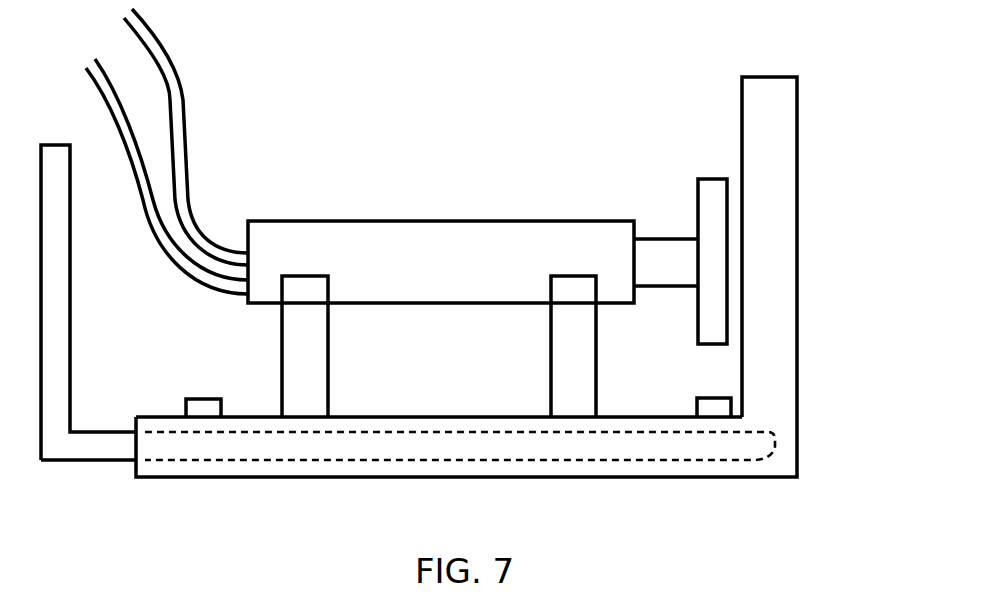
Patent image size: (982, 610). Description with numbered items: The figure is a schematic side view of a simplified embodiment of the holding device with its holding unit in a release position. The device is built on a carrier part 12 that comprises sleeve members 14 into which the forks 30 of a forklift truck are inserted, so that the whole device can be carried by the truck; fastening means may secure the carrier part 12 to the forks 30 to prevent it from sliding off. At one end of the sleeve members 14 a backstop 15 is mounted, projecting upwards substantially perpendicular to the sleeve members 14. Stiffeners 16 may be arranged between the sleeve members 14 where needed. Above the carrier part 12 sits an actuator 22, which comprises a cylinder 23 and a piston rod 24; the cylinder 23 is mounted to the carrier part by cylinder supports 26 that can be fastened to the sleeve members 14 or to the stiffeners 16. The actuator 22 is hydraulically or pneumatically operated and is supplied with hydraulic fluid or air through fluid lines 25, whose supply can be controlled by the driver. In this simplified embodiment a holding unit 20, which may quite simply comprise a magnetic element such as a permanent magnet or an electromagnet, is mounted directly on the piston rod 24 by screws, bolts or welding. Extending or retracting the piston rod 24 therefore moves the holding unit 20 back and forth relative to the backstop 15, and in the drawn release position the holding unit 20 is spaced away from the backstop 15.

The carrier part 12 is at (812, 416).
The sleeve members 14 is at (752, 478).
The backstop 15 is at (797, 100).
The stiffeners 16 is at (201, 399).
The holding unit 20 is at (713, 179).
The actuator 22 is at (484, 210).
The cylinder 23 is at (320, 221).
The piston rod 24 is at (668, 238).
The fluid lines 25 is at (152, 185).
The cylinder supports 26 is at (329, 371).
The forks 30 is at (90, 461).